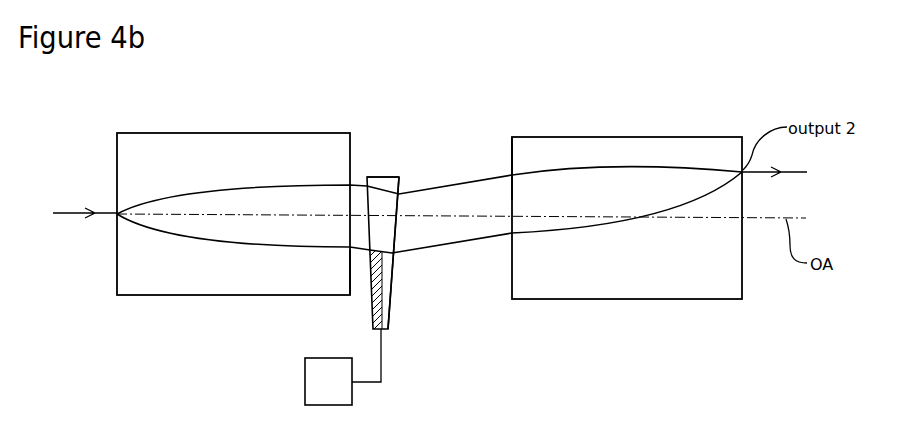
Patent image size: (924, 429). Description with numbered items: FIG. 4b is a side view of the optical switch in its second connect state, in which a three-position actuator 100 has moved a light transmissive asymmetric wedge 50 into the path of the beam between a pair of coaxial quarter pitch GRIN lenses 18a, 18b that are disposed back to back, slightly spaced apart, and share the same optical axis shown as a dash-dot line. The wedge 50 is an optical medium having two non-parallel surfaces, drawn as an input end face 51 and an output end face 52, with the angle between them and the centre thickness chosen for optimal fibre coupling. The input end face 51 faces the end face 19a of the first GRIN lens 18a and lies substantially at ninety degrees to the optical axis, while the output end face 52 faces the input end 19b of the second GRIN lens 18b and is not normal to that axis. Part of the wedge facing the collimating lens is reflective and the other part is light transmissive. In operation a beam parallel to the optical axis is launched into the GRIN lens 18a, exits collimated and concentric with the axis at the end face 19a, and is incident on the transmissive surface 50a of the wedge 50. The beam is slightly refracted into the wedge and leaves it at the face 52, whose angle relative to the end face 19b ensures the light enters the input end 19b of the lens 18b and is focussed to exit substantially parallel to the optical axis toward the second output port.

The GRIN lens 18a is at (180, 131).
The GRIN lens 18b is at (636, 137).
The end face 19a is at (350, 275).
The input end 19b is at (511, 153).
The wedge 50 is at (387, 283).
The transmissive surface 50a is at (383, 188).
The input end face 51 is at (378, 196).
The output end face 52 is at (403, 180).
The three-position actuator 100 is at (343, 367).